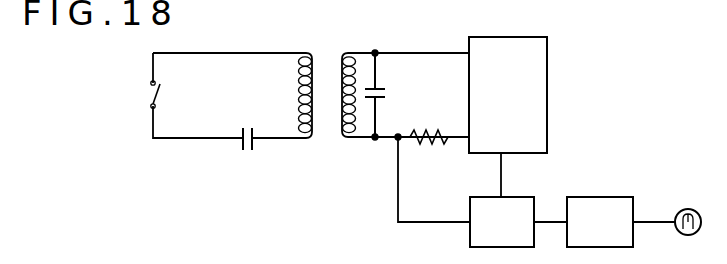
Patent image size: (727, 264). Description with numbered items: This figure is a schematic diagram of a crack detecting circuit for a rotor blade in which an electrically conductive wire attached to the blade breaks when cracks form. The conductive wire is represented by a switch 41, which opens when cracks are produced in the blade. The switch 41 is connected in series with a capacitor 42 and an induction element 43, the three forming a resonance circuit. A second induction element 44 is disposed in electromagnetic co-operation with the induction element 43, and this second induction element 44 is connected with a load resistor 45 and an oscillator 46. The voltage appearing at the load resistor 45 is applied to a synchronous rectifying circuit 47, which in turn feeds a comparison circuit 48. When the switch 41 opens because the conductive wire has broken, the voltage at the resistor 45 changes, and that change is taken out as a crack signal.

The switch 41 is at (161, 88).
The capacitor 42 is at (248, 152).
The induction element 43 is at (298, 92).
The second induction element 44 is at (343, 125).
The load resistor 45 is at (428, 134).
The oscillator 46 is at (520, 112).
The synchronous rectifying circuit 47 is at (515, 237).
The comparison circuit 48 is at (612, 237).